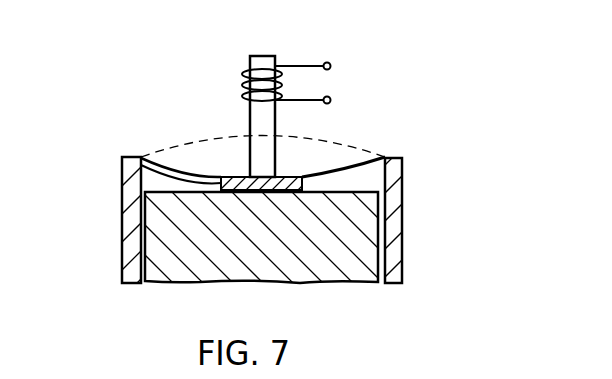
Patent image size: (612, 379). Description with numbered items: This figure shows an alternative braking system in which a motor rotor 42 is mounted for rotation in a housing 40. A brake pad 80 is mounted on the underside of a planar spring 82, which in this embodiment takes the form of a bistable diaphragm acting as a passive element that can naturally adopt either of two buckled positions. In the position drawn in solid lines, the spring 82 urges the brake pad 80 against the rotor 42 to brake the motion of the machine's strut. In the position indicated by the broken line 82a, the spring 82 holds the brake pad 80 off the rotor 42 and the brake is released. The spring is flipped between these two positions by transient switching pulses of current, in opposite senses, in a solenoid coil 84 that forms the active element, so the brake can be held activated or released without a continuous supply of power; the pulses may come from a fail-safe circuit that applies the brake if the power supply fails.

The housing 40 is at (402, 229).
The motor rotor 42 is at (298, 268).
The brake pad 80 is at (221, 184).
The planar spring 82 is at (183, 158).
The broken line 82a is at (356, 150).
The solenoid coil 84 is at (243, 84).